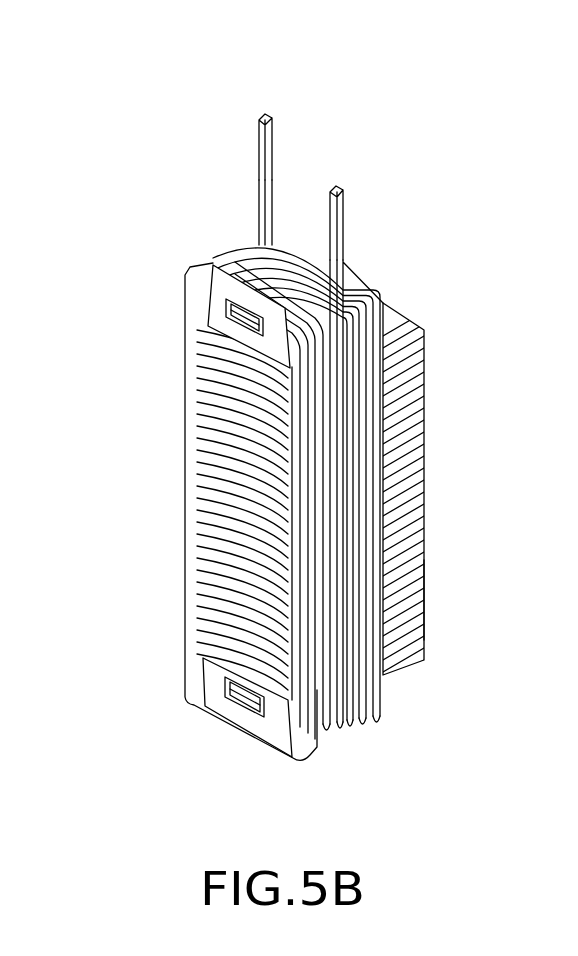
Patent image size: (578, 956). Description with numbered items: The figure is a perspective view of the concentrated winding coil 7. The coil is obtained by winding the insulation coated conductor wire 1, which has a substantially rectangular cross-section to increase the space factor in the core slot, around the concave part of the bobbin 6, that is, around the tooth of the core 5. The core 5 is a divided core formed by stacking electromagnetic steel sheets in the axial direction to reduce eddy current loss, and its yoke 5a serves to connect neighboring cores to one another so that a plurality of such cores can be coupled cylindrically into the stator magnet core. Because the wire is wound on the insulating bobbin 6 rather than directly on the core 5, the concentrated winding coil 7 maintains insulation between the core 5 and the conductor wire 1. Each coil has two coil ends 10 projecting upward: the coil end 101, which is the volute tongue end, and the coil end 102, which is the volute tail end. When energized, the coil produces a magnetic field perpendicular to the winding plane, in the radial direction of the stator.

The concentrated winding coil 7 is at (323, 110).
The insulation coated conductor wire 1 is at (380, 502).
The core 5 is at (238, 496).
The yoke 5a is at (424, 588).
The bobbin 6 is at (193, 683).
The coil ends 10 is at (258, 125).
The coil end 101 is at (258, 168).
The coil end 102 is at (345, 262).